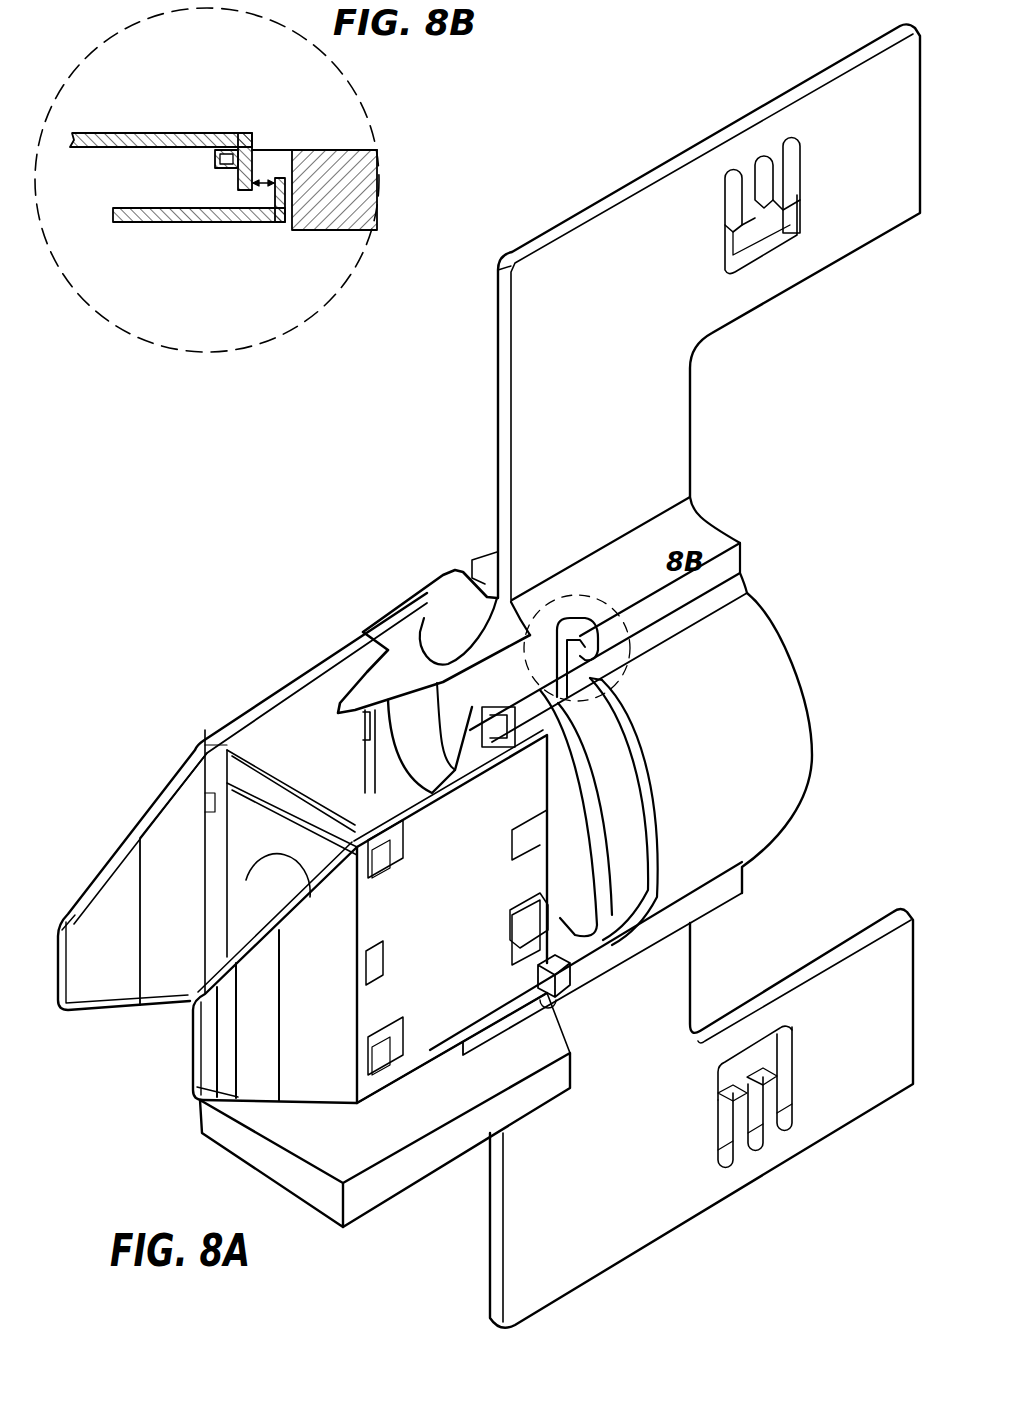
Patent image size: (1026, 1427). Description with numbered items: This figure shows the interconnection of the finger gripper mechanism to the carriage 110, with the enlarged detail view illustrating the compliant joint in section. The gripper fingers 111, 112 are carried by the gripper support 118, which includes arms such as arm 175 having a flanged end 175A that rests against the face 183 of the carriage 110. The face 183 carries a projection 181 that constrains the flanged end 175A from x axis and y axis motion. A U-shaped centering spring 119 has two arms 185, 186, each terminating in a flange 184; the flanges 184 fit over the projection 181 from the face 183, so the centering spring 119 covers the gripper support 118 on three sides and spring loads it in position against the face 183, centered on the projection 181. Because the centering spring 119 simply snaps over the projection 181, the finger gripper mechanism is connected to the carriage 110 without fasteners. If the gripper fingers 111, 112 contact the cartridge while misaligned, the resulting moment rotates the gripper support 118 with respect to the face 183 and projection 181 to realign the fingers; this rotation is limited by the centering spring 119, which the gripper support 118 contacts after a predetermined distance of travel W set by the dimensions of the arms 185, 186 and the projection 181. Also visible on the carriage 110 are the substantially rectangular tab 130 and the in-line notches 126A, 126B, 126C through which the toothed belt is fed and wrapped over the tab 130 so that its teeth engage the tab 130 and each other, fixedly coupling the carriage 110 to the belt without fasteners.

In FIG. 8A, the carriage 110 is at (498, 383).
In FIG. 8A, the gripper finger 111 is at (188, 1064).
In FIG. 8A, the gripper finger 112 is at (127, 831).
In FIG. 8A, the gripper support 118 is at (480, 753).
In FIG. 8B, the centering spring 119 is at (168, 132).
In FIG. 8A, the centering spring 119 is at (370, 740).
In FIG. 8A, the notch 126A is at (793, 157).
In FIG. 8A, the notch 126B is at (763, 178).
In FIG. 8A, the notch 126C is at (730, 193).
In FIG. 8A, the tab 130 is at (753, 210).
In FIG. 8B, the arm 175 is at (177, 209).
In FIG. 8A, the arm 175 is at (530, 700).
In FIG. 8B, the flanged end 175A is at (270, 200).
In FIG. 8B, the projection 181 is at (231, 148).
In FIG. 8A, the projection 181 is at (603, 683).
In FIG. 8B, the face 183 is at (281, 228).
In FIG. 8A, the face 183 is at (573, 787).
In FIG. 8B, the flange 184 is at (237, 183).
In FIG. 8A, the arm 185 is at (407, 617).
In FIG. 8A, the arm 186 is at (548, 1000).
In FIG. 8B, the predetermined distance of travel W is at (263, 174).